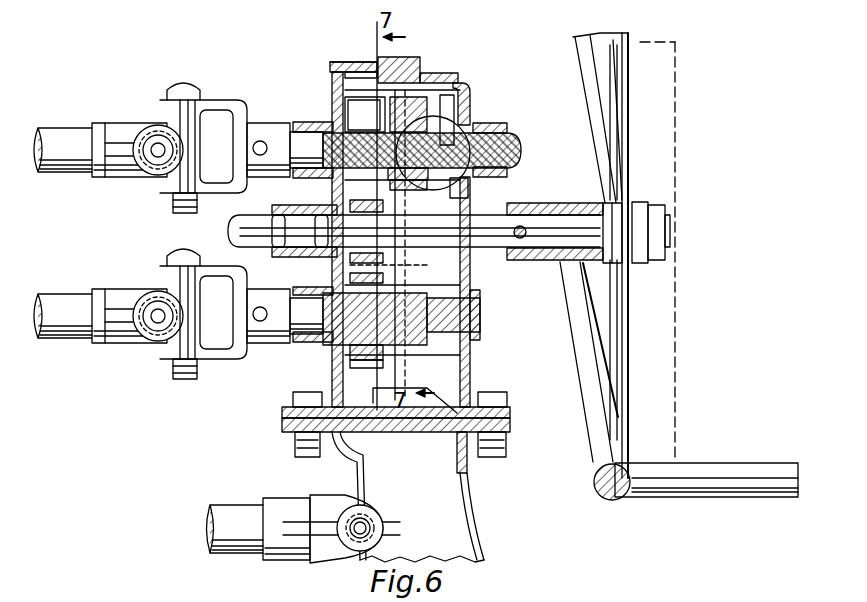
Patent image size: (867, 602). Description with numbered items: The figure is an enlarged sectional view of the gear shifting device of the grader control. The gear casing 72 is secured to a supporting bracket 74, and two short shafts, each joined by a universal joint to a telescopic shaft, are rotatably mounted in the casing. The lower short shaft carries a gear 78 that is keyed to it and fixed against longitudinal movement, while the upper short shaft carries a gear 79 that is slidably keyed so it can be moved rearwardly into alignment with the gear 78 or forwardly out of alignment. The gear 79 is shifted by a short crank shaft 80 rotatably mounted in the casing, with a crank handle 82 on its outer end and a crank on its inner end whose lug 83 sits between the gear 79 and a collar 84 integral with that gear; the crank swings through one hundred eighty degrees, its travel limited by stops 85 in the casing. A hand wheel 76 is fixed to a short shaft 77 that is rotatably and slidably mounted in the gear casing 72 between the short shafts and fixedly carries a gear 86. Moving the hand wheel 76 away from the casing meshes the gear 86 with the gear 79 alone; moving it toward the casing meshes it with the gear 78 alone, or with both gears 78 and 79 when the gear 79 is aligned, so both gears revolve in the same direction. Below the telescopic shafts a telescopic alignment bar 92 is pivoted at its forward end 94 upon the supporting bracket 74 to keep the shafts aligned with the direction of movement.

The gear casing 72 is at (470, 383).
The supporting bracket 74 is at (460, 530).
The hand wheel 76 is at (628, 165).
The short shaft 77 is at (549, 230).
The gear 78 is at (378, 366).
The gear 79 is at (343, 93).
The crank shaft 80 is at (382, 130).
The crank handle 82 is at (515, 155).
The lug 83 is at (470, 128).
The collar 84 is at (467, 102).
The stops 85 is at (386, 177).
The gear 86 is at (382, 257).
The telescopic alignment bar 92 is at (215, 553).
The forward end 94 is at (358, 532).